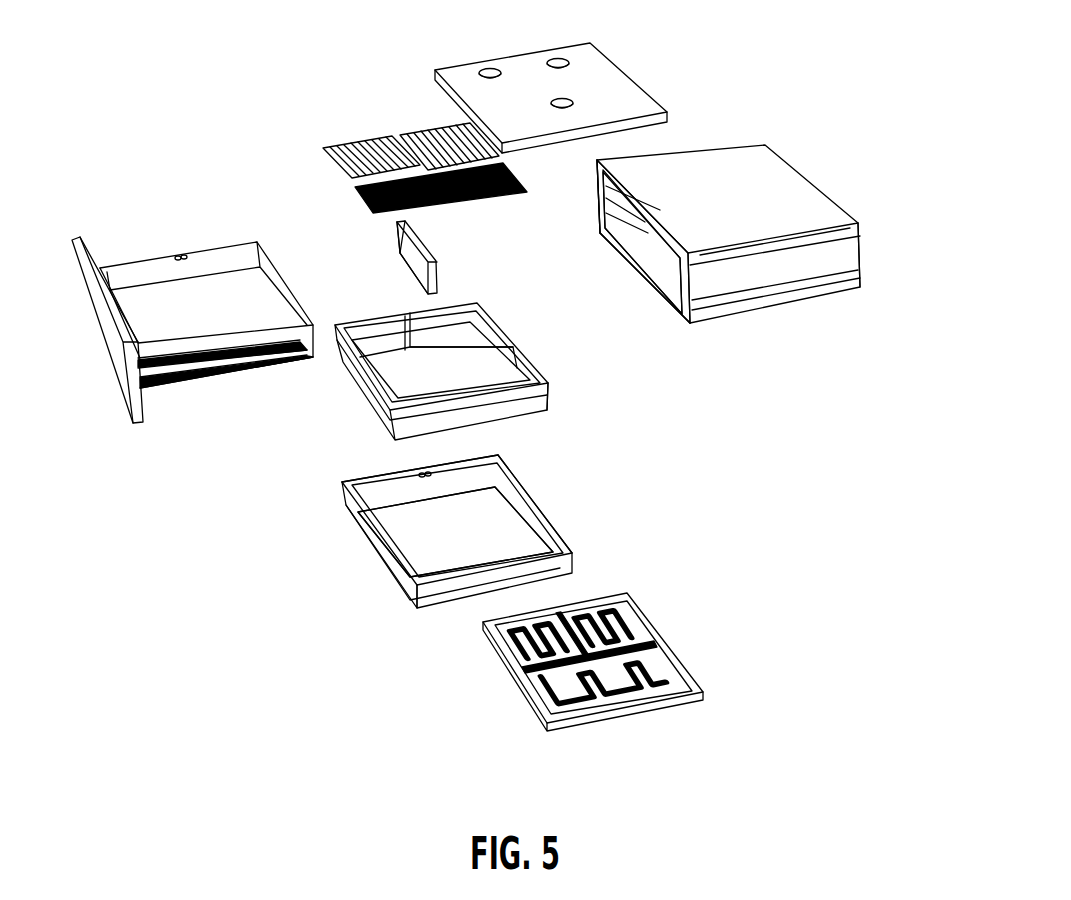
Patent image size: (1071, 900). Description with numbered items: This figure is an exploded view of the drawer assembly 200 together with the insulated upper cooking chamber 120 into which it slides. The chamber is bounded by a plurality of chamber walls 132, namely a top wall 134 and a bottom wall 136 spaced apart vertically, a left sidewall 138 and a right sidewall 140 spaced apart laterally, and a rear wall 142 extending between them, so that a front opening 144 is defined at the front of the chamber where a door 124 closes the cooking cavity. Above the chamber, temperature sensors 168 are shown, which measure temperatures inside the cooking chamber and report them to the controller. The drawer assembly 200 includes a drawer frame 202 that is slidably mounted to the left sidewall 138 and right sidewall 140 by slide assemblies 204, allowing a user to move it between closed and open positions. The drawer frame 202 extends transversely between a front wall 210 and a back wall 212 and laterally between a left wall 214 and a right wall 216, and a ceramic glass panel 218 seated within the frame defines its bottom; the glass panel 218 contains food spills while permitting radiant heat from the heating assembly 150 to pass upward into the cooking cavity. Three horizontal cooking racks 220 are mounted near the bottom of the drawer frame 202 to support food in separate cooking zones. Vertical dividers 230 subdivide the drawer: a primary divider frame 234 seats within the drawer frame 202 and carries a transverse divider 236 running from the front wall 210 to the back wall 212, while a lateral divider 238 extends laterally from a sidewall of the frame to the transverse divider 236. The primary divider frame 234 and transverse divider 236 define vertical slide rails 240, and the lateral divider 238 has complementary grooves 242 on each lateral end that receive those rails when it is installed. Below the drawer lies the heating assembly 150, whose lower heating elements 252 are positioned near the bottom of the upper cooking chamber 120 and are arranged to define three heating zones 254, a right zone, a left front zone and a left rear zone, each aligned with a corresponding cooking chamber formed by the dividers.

The drawer assembly 200 is at (62, 90).
The temperature sensors 168 is at (572, 102).
The horizontal cooking racks 220 is at (323, 167).
The chamber walls 132 is at (790, 185).
The top wall 134 is at (820, 210).
The rear wall 142 is at (862, 256).
The right sidewall 140 is at (792, 279).
The front opening 144 is at (634, 222).
The left sidewall 138 is at (601, 208).
The bottom wall 136 is at (640, 248).
The upper cooking chamber 120 is at (670, 283).
The door 124 is at (112, 357).
The drawer frame 202 is at (195, 266).
The slide assemblies 204 is at (213, 373).
The lateral divider 238 is at (416, 267).
The complementary grooves 242 is at (393, 234).
The transverse divider 236 is at (389, 391).
The primary divider frame 234 is at (543, 370).
The vertical slide rails 240 is at (418, 336).
The vertical dividers 230 is at (431, 251).
The front wall 210 is at (373, 547).
The back wall 212 is at (543, 512).
The left wall 214 is at (481, 455).
The right wall 216 is at (437, 607).
The ceramic glass panel 218 is at (476, 550).
The heating assembly 150 is at (638, 625).
The lower heating elements 252 is at (667, 683).
The heating zones 254 is at (607, 610).